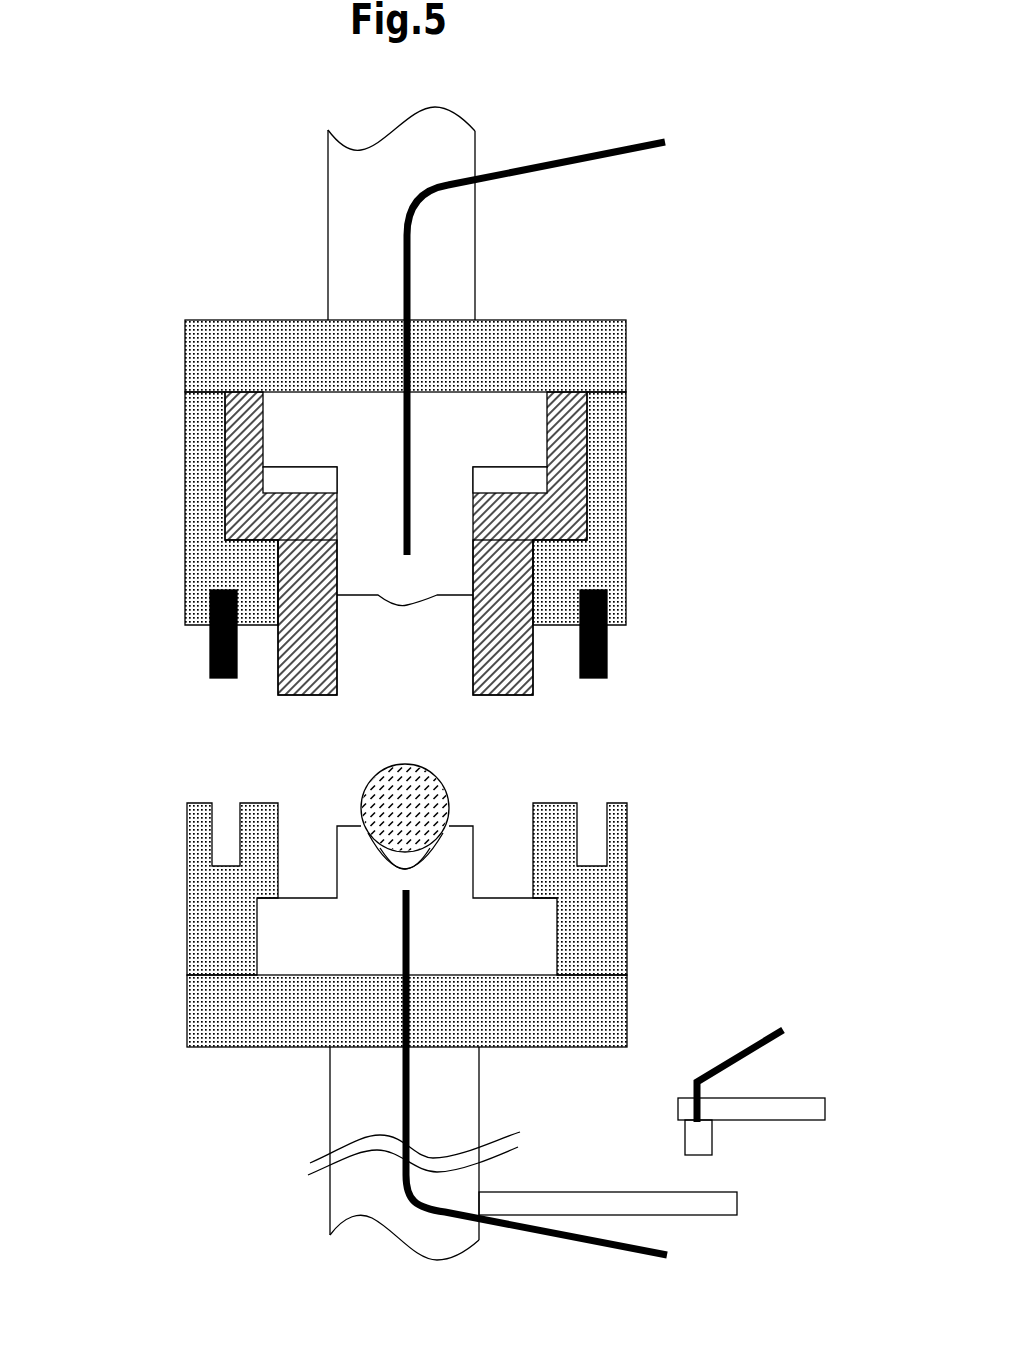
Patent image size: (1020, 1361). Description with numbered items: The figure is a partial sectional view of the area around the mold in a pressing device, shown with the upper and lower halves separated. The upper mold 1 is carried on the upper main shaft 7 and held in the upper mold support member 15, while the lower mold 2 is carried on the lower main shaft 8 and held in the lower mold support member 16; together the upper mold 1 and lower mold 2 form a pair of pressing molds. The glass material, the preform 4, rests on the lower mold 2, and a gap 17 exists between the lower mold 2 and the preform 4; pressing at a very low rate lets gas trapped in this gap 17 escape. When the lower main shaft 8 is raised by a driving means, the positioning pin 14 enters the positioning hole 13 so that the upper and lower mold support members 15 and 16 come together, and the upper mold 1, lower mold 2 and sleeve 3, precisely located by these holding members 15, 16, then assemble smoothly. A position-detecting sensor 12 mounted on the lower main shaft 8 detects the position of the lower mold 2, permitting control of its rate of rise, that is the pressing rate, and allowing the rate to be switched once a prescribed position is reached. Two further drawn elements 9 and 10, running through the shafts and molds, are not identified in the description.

The upper mold 1 is at (332, 422).
The lower mold 2 is at (310, 927).
The sleeve 3 is at (278, 672).
The preform 4 is at (375, 800).
The upper main shaft 7 is at (362, 212).
The lower main shaft 8 is at (357, 1105).
The upper thermocouple wire 9 is at (410, 528).
The lower thermocouple wire 10 is at (413, 947).
The position-detecting sensor 12 is at (705, 1145).
The positioning hole 13 is at (595, 805).
The positioning pin 14 is at (607, 650).
The upper mold support member 15 is at (185, 517).
The lower mold support member 16 is at (215, 962).
The gap 17 is at (408, 858).